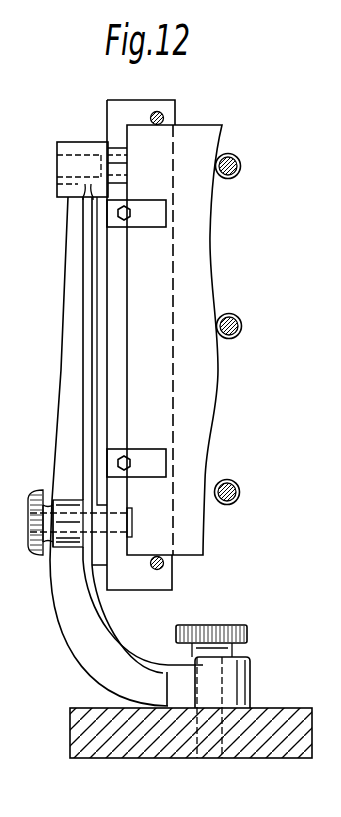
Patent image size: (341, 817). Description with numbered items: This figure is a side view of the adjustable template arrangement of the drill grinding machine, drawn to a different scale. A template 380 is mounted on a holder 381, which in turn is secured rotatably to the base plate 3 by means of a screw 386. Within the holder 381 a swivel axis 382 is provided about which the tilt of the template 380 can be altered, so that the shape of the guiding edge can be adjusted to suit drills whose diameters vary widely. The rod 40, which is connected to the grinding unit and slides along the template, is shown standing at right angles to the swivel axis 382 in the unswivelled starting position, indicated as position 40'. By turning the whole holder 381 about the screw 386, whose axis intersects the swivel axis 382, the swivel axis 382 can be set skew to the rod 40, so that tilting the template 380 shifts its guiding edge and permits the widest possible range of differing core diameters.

The base plate 3 is at (110, 722).
The rod 40 is at (240, 304).
The rod position 40' is at (249, 334).
The template 380 is at (192, 252).
The holder 381 is at (70, 362).
The swivel axis 382 is at (76, 150).
The screw 386 is at (250, 637).